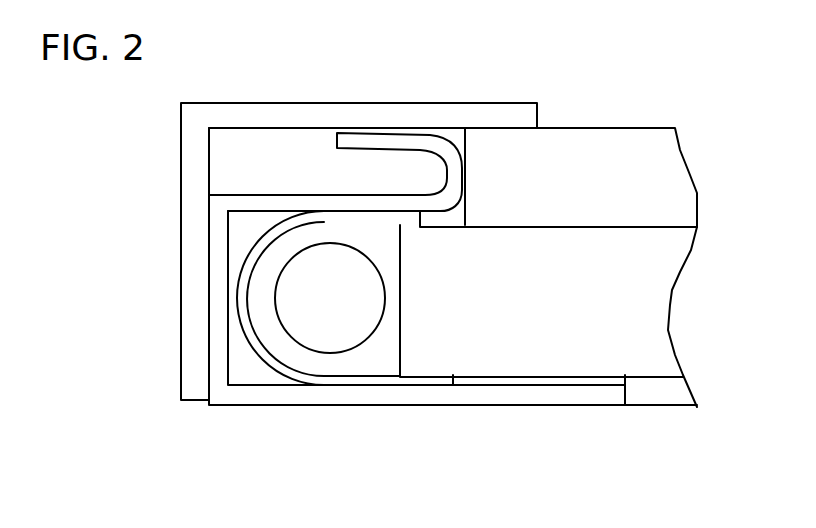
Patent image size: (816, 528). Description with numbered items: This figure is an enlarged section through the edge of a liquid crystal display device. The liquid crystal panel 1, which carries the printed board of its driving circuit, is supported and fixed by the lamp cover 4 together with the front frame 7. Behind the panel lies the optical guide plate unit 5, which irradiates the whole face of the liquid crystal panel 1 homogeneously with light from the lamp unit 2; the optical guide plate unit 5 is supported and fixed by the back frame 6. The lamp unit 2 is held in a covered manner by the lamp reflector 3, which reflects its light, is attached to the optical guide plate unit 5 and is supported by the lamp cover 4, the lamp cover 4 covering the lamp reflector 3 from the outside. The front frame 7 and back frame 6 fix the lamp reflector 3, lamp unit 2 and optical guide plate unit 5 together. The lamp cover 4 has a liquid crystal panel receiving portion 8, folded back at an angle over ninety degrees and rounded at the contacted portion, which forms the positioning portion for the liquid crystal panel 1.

The liquid crystal panel 1 is at (623, 130).
The lamp unit 2 is at (362, 342).
The lamp reflector 3 is at (285, 380).
The lamp cover 4 is at (226, 403).
The optical guide plate unit 5 is at (583, 377).
The back frame 6 is at (670, 405).
The front frame 7 is at (299, 103).
The liquid crystal panel receiving portion 8 is at (448, 162).